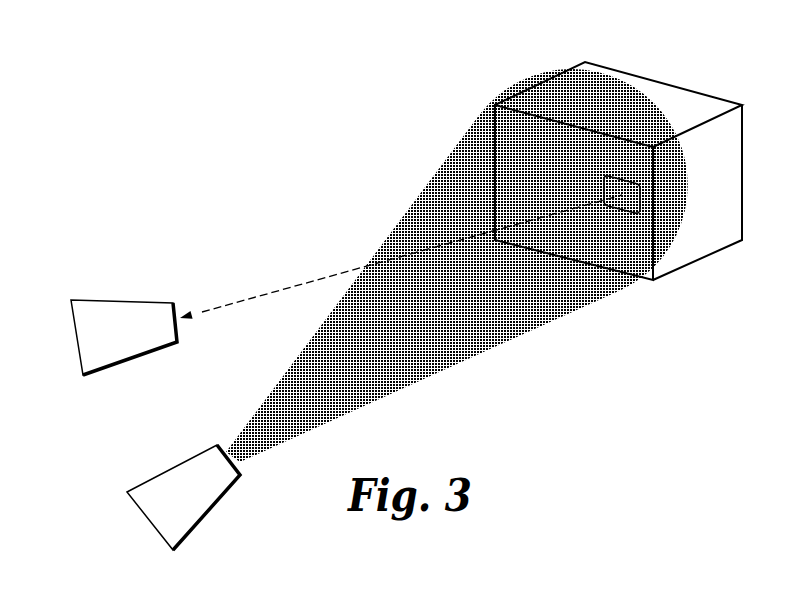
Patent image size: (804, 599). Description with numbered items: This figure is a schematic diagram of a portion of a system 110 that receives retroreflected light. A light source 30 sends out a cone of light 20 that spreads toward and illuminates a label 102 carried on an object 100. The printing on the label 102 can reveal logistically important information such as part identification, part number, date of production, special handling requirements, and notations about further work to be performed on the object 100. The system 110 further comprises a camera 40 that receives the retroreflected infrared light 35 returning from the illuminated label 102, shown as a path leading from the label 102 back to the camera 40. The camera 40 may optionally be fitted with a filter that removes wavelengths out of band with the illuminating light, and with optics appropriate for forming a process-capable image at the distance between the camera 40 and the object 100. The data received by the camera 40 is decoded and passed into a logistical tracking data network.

The system 110 is at (150, 172).
The object 100 is at (695, 63).
The label 102 is at (623, 213).
The cone of light 20 is at (428, 180).
The light source 30 is at (148, 522).
The retroreflected infrared light 35 is at (260, 303).
The camera 40 is at (73, 332).